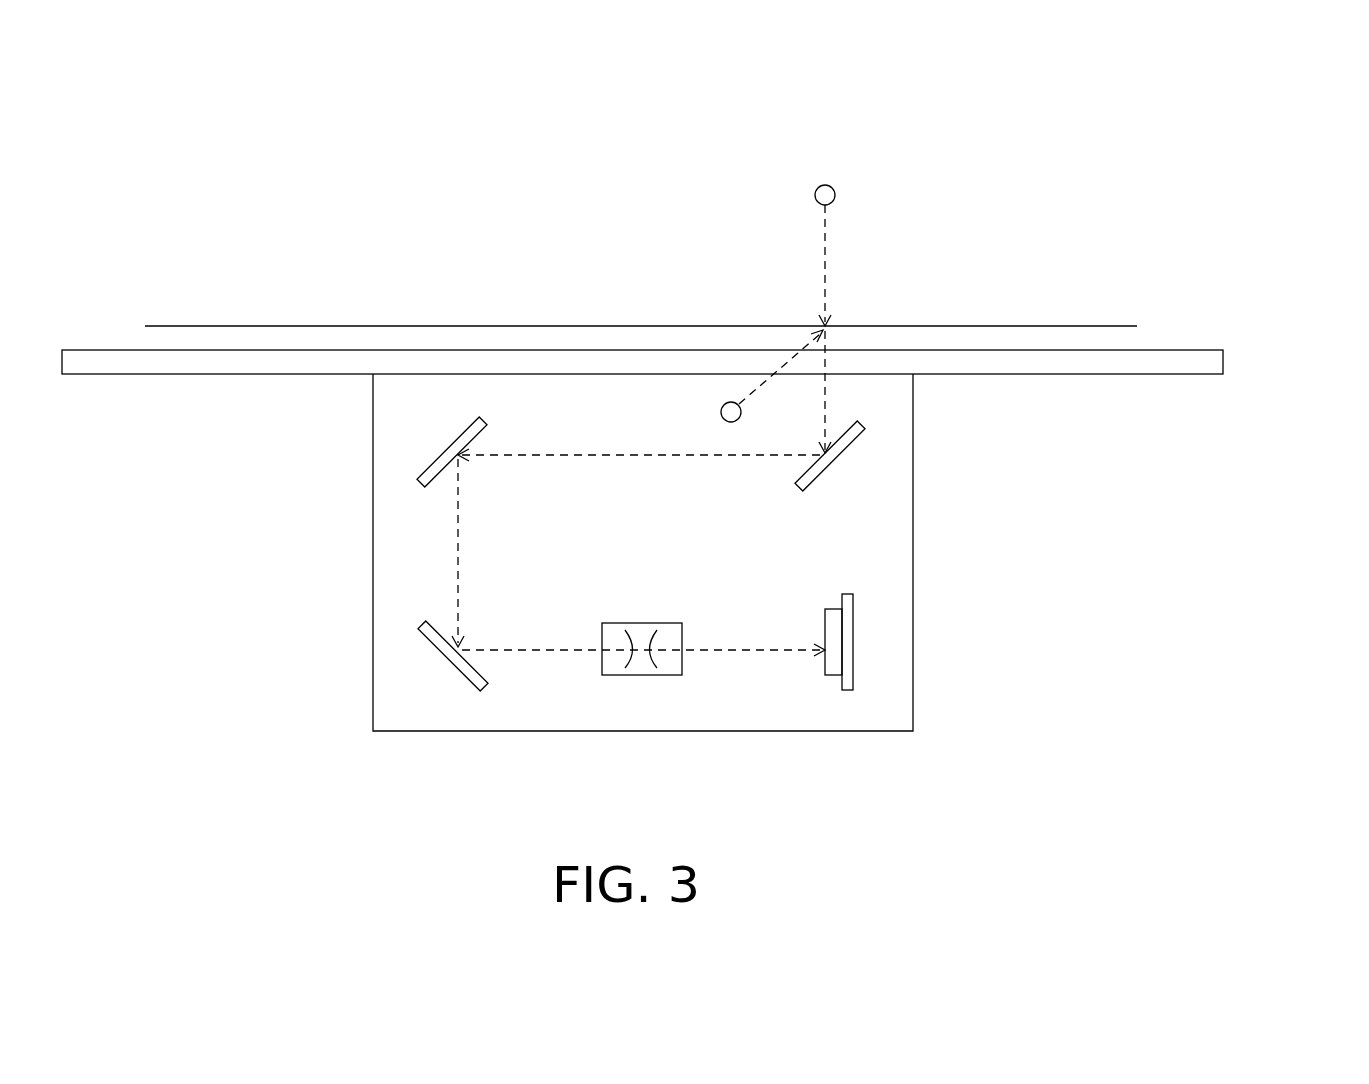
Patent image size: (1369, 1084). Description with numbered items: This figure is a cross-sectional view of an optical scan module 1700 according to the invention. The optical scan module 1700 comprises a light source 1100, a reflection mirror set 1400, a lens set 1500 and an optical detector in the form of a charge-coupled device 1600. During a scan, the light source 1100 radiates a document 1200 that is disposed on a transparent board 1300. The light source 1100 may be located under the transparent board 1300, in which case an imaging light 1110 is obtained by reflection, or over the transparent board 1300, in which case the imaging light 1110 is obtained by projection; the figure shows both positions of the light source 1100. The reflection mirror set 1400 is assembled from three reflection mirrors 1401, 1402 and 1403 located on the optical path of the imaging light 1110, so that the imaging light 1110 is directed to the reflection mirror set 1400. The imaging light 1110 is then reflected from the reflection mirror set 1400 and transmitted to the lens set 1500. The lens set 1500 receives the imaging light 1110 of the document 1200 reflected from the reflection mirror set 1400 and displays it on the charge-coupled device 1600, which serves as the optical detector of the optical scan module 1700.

The light source 1100 is at (835, 189).
The imaging light 1110 is at (826, 408).
The document 1200 is at (1063, 326).
The transparent board 1300 is at (1155, 374).
The reflection mirror set 1400 is at (481, 554).
The reflection mirror 1401 is at (797, 483).
The reflection mirror 1402 is at (432, 466).
The reflection mirror 1403 is at (438, 647).
The lens set 1500 is at (637, 670).
The charge-coupled device 1600 is at (832, 667).
The optical scan module 1700 is at (913, 565).